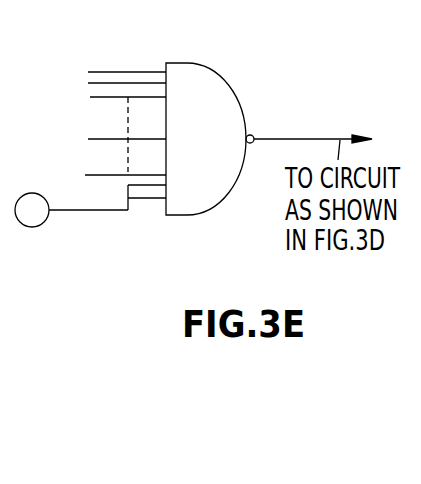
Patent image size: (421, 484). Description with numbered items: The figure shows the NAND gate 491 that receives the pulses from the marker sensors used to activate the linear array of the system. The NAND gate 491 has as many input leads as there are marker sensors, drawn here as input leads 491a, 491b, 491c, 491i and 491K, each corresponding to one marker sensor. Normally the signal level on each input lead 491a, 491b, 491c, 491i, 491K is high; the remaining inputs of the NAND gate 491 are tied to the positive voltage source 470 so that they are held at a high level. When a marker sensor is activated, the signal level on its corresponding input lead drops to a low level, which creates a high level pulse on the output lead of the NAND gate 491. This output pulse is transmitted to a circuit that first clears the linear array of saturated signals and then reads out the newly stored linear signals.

The NAND gate 491 is at (235, 97).
The input lead 491a is at (88, 72).
The input lead 491b is at (88, 83).
The input lead 491c is at (90, 97).
The input lead 491i is at (88, 139).
The input lead 491K is at (85, 175).
The positive voltage source 470 is at (44, 222).